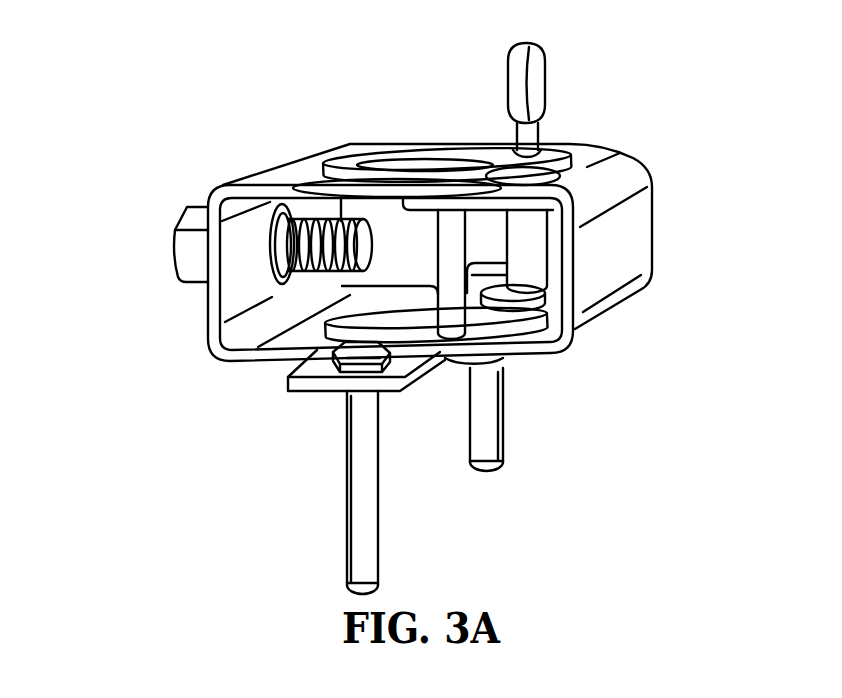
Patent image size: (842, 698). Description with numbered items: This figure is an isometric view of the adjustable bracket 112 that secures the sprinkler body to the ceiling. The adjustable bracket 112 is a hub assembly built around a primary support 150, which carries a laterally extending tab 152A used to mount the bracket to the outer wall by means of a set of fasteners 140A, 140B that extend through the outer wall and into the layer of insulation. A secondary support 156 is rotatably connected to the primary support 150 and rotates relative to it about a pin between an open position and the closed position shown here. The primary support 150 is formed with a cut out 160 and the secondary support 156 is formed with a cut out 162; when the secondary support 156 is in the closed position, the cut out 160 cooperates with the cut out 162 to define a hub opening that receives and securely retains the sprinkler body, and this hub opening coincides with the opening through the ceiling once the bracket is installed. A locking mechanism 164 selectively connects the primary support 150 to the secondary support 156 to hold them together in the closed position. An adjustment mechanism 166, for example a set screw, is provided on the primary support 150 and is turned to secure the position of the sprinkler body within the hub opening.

The adjustable bracket 112 is at (227, 70).
The primary support 150 is at (302, 165).
The secondary support 156 is at (636, 160).
The cut out 160 is at (400, 156).
The locking mechanism 164 is at (533, 77).
The adjustment mechanism 166 is at (182, 211).
The cut out 162 is at (344, 313).
The laterally extending tab 152A is at (297, 388).
The fastener 140A is at (370, 555).
The fastener 140B is at (488, 446).